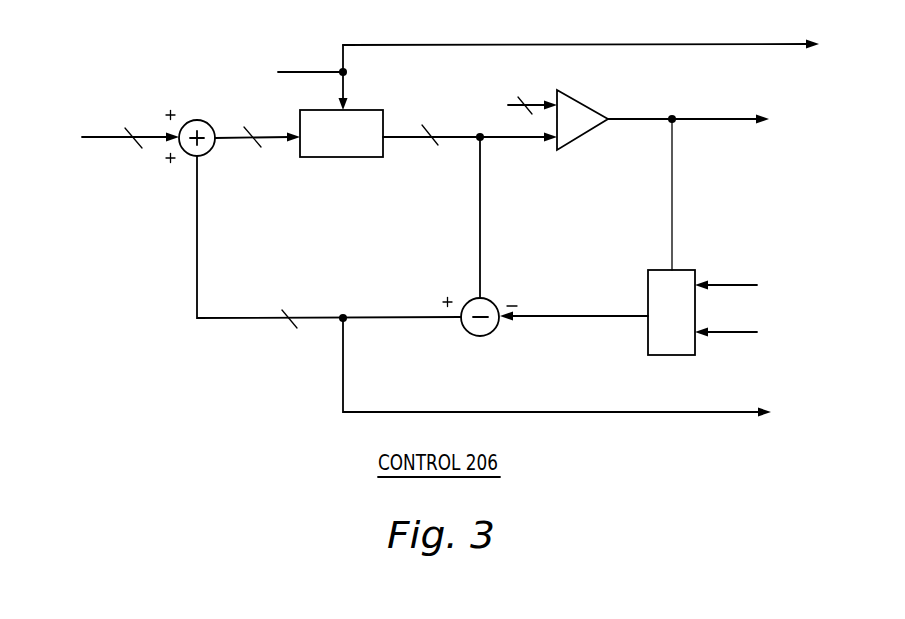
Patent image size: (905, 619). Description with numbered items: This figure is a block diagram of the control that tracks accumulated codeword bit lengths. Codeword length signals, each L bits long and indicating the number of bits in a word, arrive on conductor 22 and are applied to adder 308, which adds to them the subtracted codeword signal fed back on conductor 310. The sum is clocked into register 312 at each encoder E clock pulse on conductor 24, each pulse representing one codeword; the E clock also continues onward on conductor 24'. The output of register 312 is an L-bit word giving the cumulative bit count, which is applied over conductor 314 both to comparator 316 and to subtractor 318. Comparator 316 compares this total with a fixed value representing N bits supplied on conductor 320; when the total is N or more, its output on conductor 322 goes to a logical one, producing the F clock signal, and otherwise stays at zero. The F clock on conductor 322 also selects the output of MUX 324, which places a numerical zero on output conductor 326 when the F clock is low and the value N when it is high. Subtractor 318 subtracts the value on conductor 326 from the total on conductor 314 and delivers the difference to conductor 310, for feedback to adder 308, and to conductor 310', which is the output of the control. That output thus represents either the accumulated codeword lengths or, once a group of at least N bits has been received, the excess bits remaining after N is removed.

The conductor 22 is at (100, 135).
The adder 308 is at (204, 121).
The conductor 24 is at (285, 69).
The conductor 24' is at (581, 29).
The register 312 is at (366, 110).
The conductor 314 is at (494, 129).
The conductor 320 is at (542, 92).
The comparator 316 is at (603, 108).
The conductor 322 is at (732, 117).
The MUX 324 is at (673, 357).
The output conductor 326 is at (586, 319).
The subtractor 318 is at (481, 337).
The conductor 310 is at (329, 254).
The conductor 310' is at (557, 381).